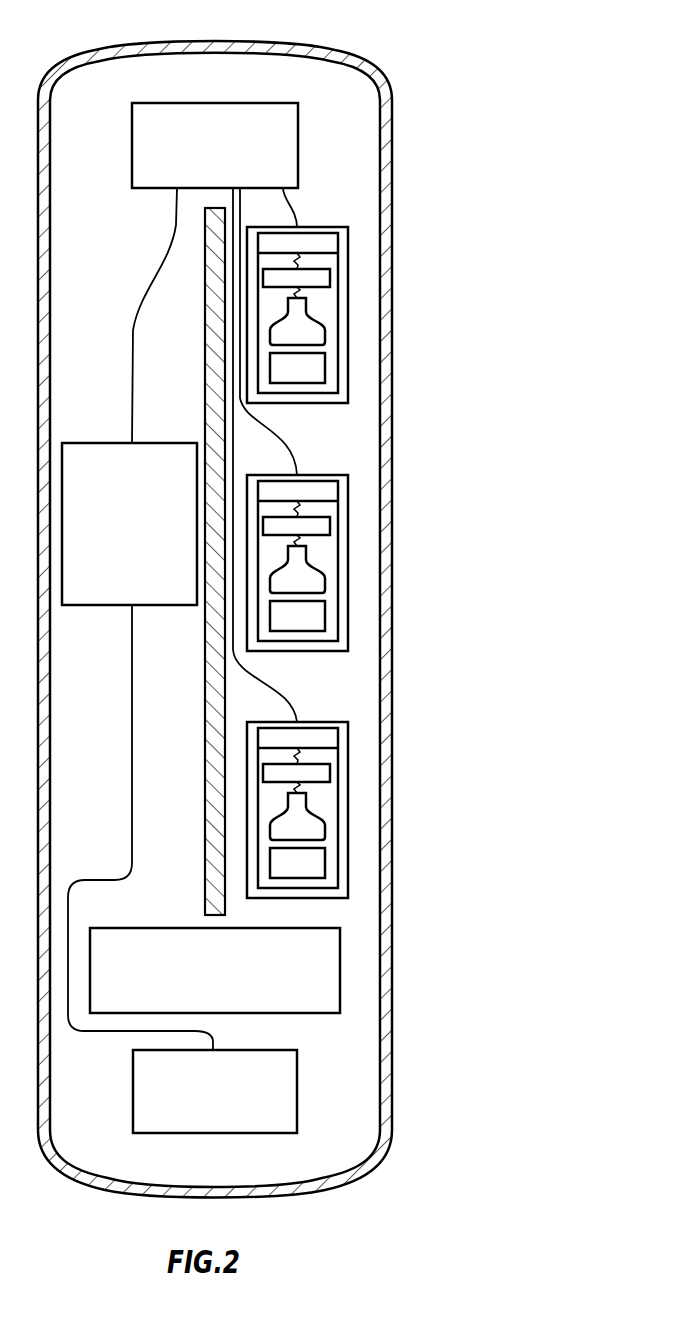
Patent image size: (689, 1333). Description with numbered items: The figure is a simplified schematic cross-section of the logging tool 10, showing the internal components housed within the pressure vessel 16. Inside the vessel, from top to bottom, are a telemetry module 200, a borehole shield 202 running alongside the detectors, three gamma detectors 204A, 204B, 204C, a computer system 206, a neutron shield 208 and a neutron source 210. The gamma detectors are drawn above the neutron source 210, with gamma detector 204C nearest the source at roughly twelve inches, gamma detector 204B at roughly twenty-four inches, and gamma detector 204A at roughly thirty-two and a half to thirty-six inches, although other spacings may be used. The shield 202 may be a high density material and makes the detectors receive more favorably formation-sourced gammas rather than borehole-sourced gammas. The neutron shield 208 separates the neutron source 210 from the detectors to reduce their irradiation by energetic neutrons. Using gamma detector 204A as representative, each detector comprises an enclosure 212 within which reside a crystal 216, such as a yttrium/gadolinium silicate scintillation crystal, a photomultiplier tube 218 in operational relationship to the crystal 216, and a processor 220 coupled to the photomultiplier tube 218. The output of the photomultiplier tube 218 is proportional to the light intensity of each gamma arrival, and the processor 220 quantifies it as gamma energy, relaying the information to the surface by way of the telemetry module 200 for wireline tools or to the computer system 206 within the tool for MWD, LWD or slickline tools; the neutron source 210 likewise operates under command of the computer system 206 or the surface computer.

The logging tool 10 is at (500, 83).
The pressure vessel 16 is at (392, 209).
The telemetry module 200 is at (150, 188).
The borehole shield 202 is at (205, 323).
The gamma detector 204A is at (282, 315).
The gamma detector 204B is at (348, 525).
The gamma detector 204C is at (348, 775).
The computer system 206 is at (152, 565).
The neutron shield 208 is at (340, 960).
The neutron source 210 is at (297, 1075).
The enclosure 212 is at (339, 250).
The crystal 216 is at (318, 368).
The photomultiplier tube 218 is at (327, 337).
The processor 220 is at (263, 277).